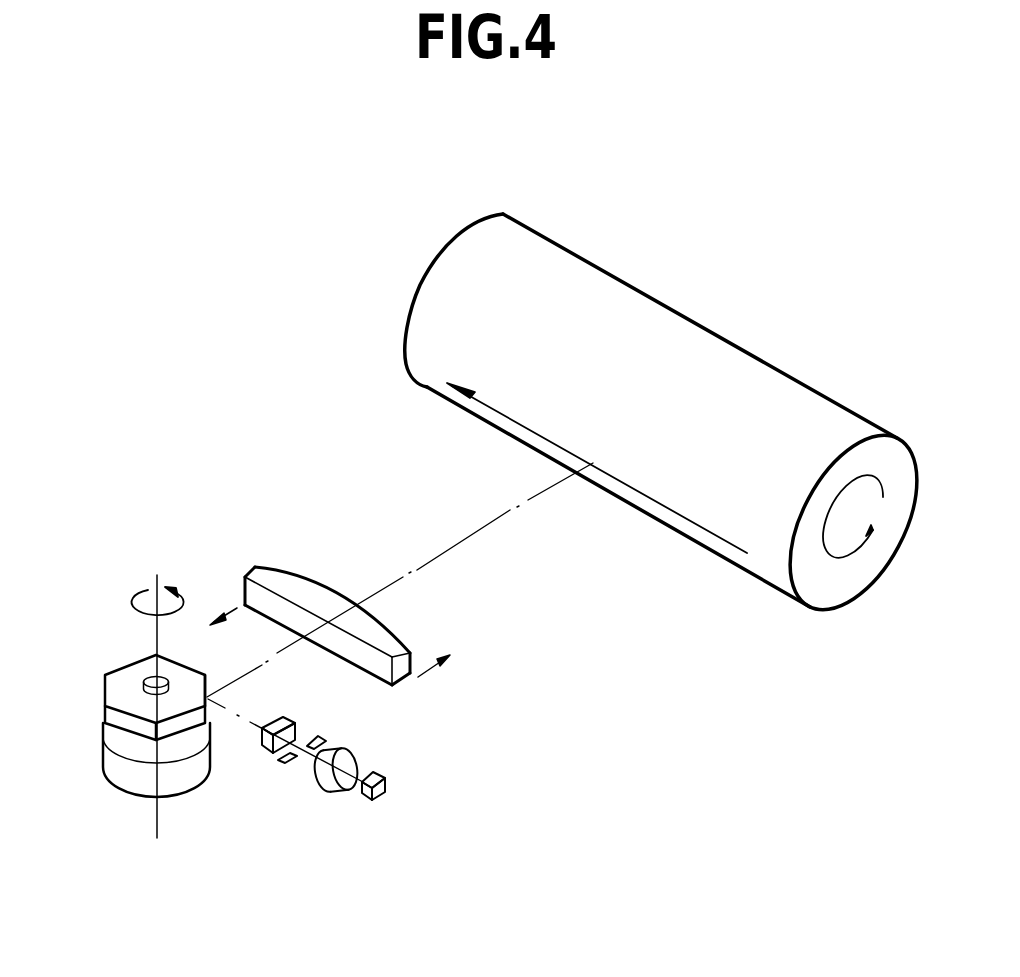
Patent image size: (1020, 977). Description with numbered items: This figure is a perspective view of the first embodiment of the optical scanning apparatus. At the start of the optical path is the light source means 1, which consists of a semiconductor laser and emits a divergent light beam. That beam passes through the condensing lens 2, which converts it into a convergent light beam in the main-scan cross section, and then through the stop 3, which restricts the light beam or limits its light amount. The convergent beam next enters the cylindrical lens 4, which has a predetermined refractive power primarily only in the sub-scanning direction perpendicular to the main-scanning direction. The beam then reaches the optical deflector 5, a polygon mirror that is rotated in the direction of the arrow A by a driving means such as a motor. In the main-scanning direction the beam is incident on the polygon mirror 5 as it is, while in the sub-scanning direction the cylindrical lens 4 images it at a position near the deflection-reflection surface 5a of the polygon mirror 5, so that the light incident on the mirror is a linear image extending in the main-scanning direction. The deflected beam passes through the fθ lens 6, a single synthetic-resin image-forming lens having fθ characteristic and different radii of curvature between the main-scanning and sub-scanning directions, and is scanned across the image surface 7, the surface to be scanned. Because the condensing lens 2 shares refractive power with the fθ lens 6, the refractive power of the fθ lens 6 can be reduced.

The light source means 1 is at (386, 788).
The condensing lens 2 is at (329, 791).
The stop 3 is at (318, 737).
The cylindrical lens 4 is at (300, 717).
The optical deflector 5 is at (112, 685).
The deflection-reflection surface 5a is at (207, 720).
The fθ lens 6 is at (297, 572).
The image surface 7 is at (667, 507).
The rotation direction arrow A is at (130, 604).